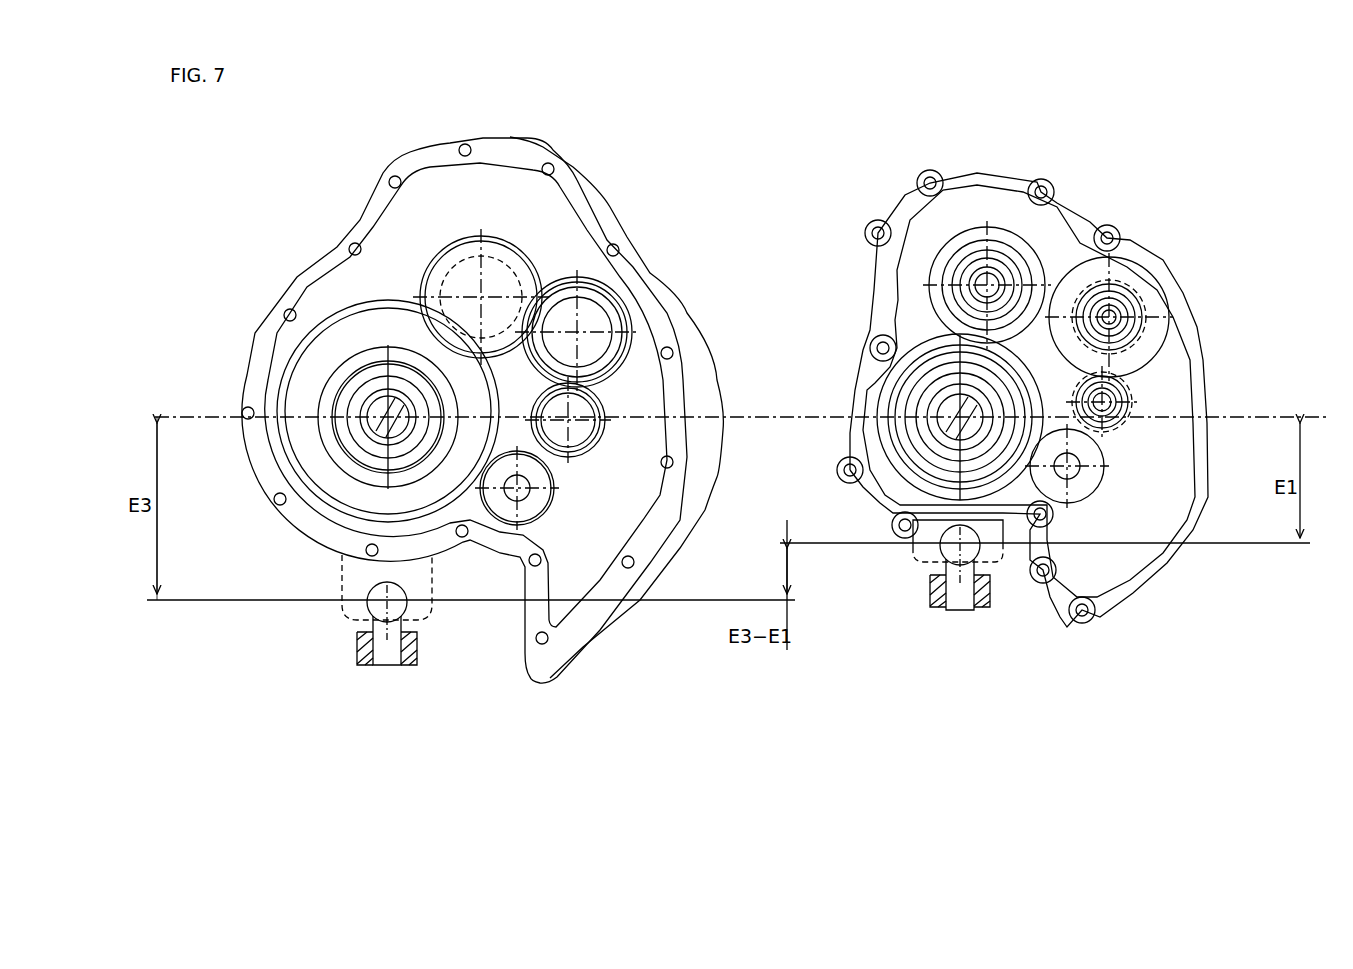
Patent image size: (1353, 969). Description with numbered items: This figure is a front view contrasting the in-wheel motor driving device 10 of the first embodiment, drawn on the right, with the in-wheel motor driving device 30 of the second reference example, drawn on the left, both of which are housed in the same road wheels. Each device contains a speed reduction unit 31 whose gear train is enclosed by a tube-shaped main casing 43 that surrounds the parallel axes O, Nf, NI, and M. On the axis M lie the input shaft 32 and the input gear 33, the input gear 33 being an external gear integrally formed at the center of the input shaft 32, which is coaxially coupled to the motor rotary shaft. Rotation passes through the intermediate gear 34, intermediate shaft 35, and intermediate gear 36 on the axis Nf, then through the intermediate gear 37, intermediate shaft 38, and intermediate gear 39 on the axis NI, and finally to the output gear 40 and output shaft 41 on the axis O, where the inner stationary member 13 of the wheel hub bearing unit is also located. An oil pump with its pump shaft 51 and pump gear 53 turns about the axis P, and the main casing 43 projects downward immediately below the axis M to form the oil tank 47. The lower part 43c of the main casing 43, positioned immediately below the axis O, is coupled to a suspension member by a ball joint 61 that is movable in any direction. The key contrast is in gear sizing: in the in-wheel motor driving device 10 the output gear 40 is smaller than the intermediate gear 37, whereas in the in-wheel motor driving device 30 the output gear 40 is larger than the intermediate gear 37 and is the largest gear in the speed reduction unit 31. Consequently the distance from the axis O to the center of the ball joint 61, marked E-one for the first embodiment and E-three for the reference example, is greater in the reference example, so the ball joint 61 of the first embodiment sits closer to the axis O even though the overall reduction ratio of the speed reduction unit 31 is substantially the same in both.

The in-wheel motor driving device 10 is at (1097, 207).
The in-wheel motor driving device 30 is at (554, 142).
The speed reduction unit 31 is at (258, 334).
The main casing 43 is at (585, 215).
The lower part of the main casing 43c is at (393, 555).
The oil tank 47 is at (565, 593).
The output gear 40 is at (285, 365).
The output shaft 41 is at (350, 387).
The inner stationary member 13 is at (370, 407).
The axis O is at (378, 423).
The intermediate gear 37 is at (452, 250).
The intermediate shaft 38 is at (450, 273).
The intermediate gear 39 is at (450, 280).
The axis NI is at (483, 293).
The intermediate gear 34 is at (620, 345).
The intermediate shaft 35 is at (607, 330).
The intermediate gear 36 is at (600, 305).
The axis Nf is at (577, 332).
The input shaft 32 is at (588, 412).
The input gear 33 is at (598, 400).
The axis M is at (578, 430).
The pump shaft 51 is at (540, 497).
The pump gear 53 is at (522, 496).
The axis P is at (513, 497).
The ball joint 61 is at (375, 605).